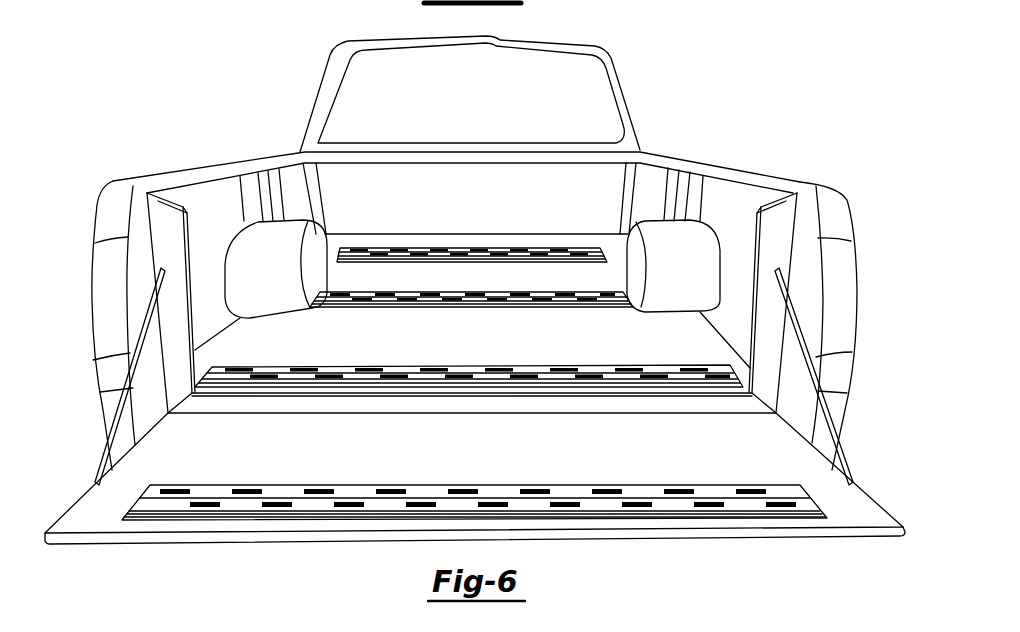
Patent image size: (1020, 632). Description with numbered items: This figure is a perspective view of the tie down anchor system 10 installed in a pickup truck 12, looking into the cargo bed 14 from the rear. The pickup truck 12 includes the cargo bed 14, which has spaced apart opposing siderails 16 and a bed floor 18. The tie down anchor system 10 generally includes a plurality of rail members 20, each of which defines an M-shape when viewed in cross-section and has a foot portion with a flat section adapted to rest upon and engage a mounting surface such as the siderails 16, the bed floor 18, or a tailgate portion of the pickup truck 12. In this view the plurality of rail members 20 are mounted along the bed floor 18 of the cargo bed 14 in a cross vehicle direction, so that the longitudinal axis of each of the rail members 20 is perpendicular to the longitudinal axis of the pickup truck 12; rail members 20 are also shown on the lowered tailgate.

The tie down anchor system 10 is at (737, 55).
The pickup truck 12 is at (542, 40).
The cargo bed 14 is at (287, 140).
The siderails 16 is at (173, 173).
The bed floor 18 is at (482, 350).
The rail members 20 is at (487, 292).